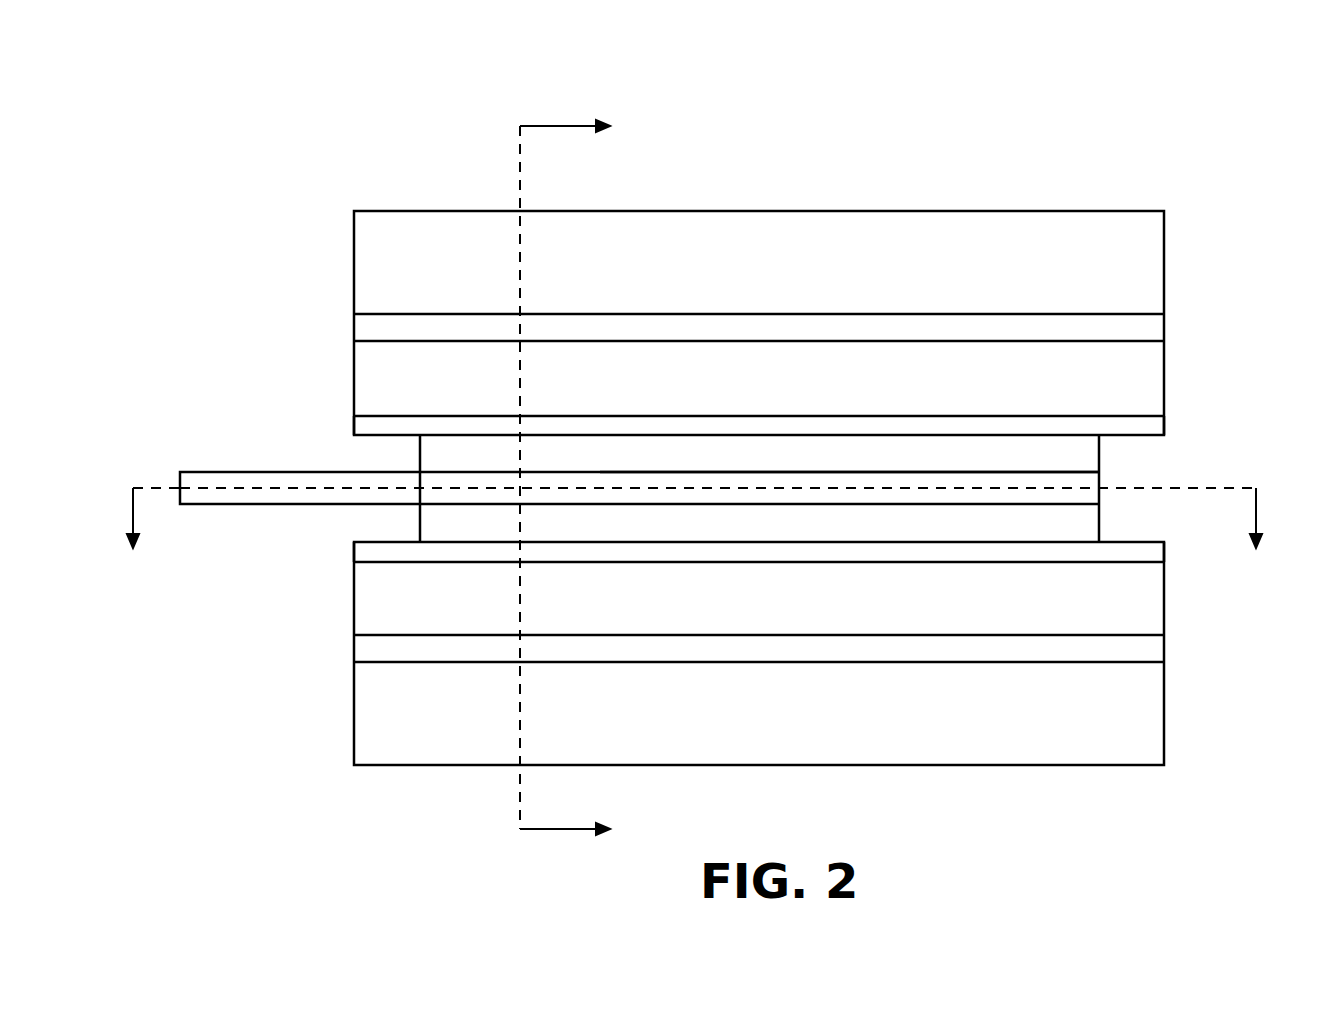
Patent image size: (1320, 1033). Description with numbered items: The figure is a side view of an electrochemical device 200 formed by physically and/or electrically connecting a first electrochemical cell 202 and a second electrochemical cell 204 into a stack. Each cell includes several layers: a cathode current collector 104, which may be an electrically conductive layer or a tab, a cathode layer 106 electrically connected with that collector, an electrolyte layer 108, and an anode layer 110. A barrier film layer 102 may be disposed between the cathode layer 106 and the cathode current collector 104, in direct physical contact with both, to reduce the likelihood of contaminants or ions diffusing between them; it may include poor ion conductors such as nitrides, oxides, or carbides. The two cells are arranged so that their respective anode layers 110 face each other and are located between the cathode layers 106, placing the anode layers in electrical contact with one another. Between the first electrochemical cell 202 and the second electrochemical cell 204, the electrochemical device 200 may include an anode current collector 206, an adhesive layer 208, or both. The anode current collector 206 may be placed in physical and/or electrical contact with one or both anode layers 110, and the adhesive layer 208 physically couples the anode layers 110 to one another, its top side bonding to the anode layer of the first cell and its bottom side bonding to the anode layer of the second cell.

The electrochemical device 200 is at (982, 98).
The first electrochemical cell 202 is at (1182, 211).
The second electrochemical cell 204 is at (1182, 542).
The cathode current collector 104 is at (865, 247).
The barrier film layer 102 is at (907, 328).
The cathode layer 106 is at (373, 372).
The electrolyte layer 108 is at (373, 424).
The anode layer 110 is at (440, 453).
The anode current collector 206 is at (227, 472).
The adhesive layer 208 is at (1012, 480).